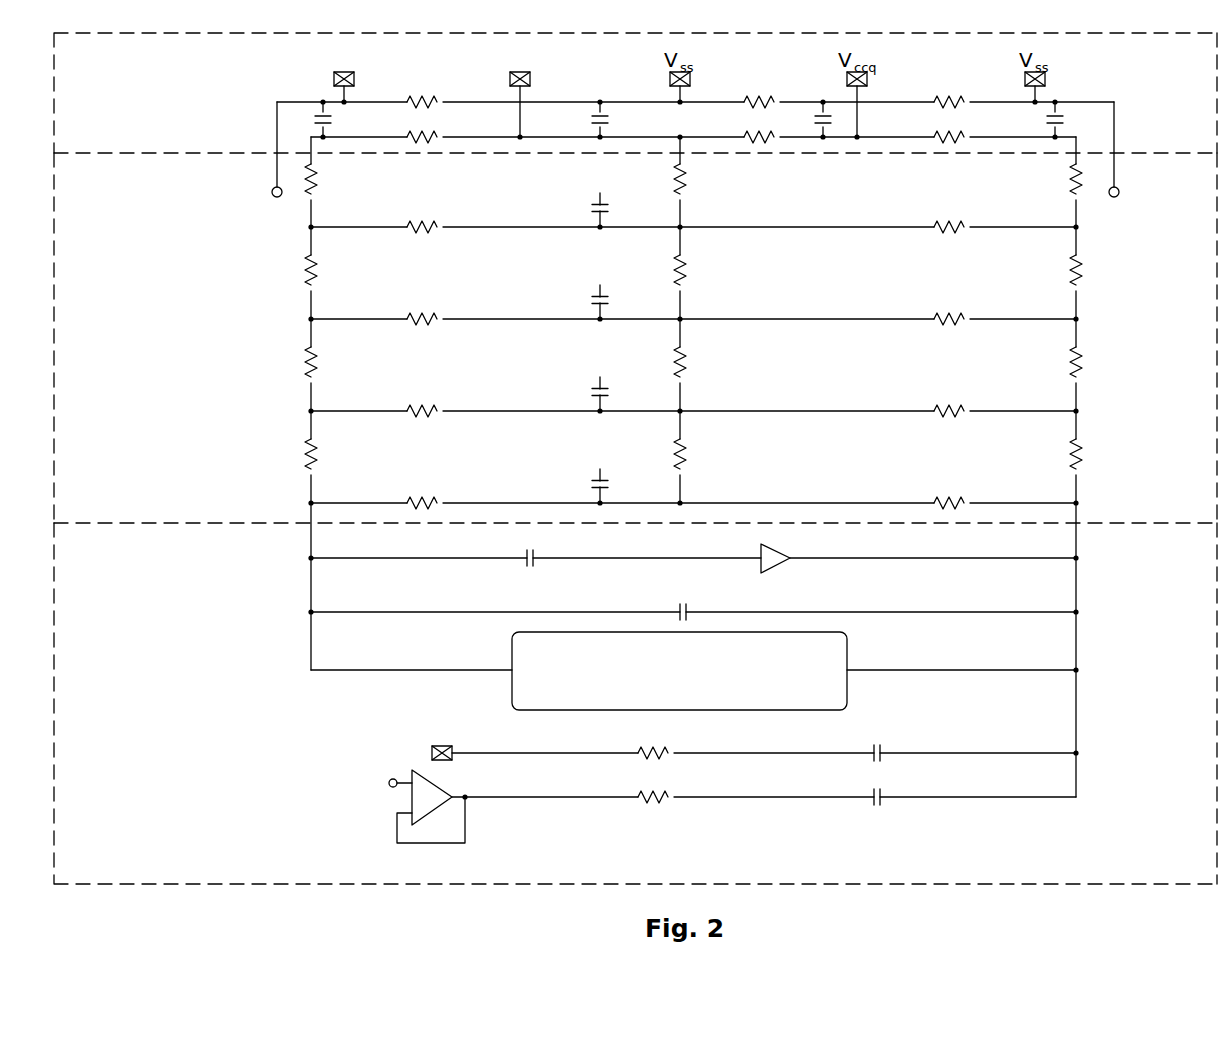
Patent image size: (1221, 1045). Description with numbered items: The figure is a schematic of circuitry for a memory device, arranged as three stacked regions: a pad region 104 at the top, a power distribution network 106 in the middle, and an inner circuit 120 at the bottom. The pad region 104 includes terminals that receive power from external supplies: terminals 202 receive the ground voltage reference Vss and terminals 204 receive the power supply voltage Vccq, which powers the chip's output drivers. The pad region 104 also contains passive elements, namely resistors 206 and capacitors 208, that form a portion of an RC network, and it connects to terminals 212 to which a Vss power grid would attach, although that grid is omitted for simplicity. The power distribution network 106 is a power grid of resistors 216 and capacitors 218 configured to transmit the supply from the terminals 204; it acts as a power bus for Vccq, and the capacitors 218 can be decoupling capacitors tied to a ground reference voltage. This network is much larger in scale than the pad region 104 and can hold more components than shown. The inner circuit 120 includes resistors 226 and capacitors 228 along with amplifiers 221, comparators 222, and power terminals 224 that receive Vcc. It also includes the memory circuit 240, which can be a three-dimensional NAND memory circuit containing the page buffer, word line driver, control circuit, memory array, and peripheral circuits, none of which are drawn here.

The pad region 104 is at (150, 117).
The power distribution network 106 is at (150, 421).
The inner circuit 120 is at (150, 727).
The terminals 202 is at (320, 78).
The terminals 204 is at (495, 78).
The resistors 206 is at (940, 82).
The capacitors 208 is at (810, 95).
The terminals 212 is at (248, 194).
The resistors 216 is at (410, 294).
The capacitors 218 is at (572, 281).
The amplifiers 221 is at (798, 586).
The comparators 222 is at (360, 797).
The power terminals 224 is at (402, 750).
The resistors 226 is at (650, 820).
The capacitors 228 is at (510, 578).
The memory circuit 240 is at (662, 696).